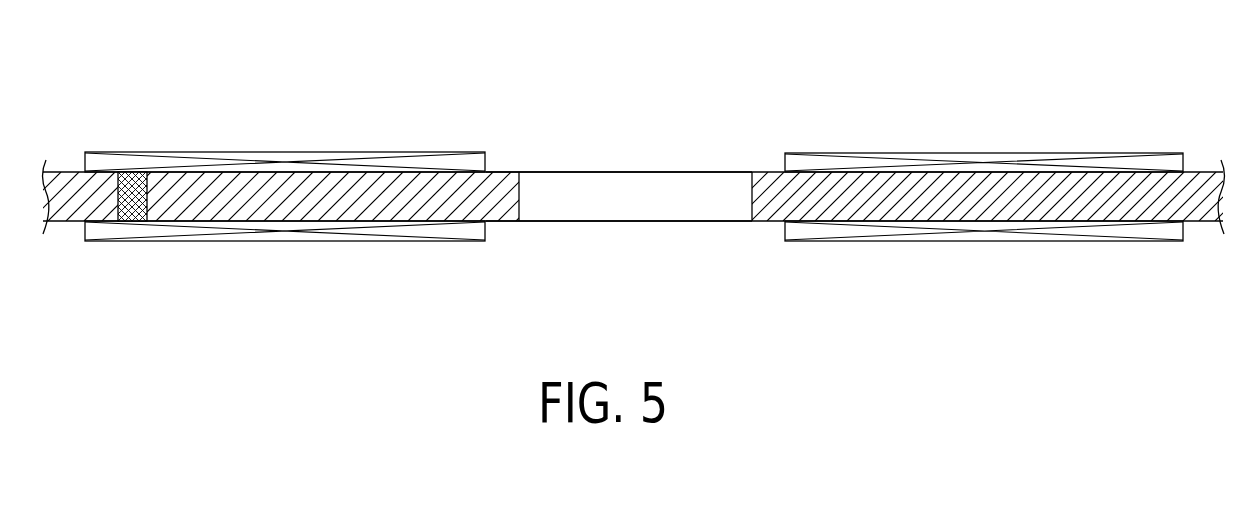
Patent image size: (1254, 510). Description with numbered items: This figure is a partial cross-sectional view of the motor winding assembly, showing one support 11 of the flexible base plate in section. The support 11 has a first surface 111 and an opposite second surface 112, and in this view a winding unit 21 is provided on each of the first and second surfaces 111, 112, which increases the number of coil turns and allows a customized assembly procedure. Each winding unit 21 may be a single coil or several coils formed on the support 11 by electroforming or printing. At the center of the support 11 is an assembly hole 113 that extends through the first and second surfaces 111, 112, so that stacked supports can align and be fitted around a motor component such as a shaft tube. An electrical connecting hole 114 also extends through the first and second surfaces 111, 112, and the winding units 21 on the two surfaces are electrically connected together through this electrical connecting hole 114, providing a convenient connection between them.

The support 11 is at (297, 190).
The first surface 111 is at (505, 172).
The second surface 112 is at (502, 221).
The assembly hole 113 is at (594, 188).
The electrical connecting hole 114 is at (119, 174).
The winding unit 21 is at (333, 153).